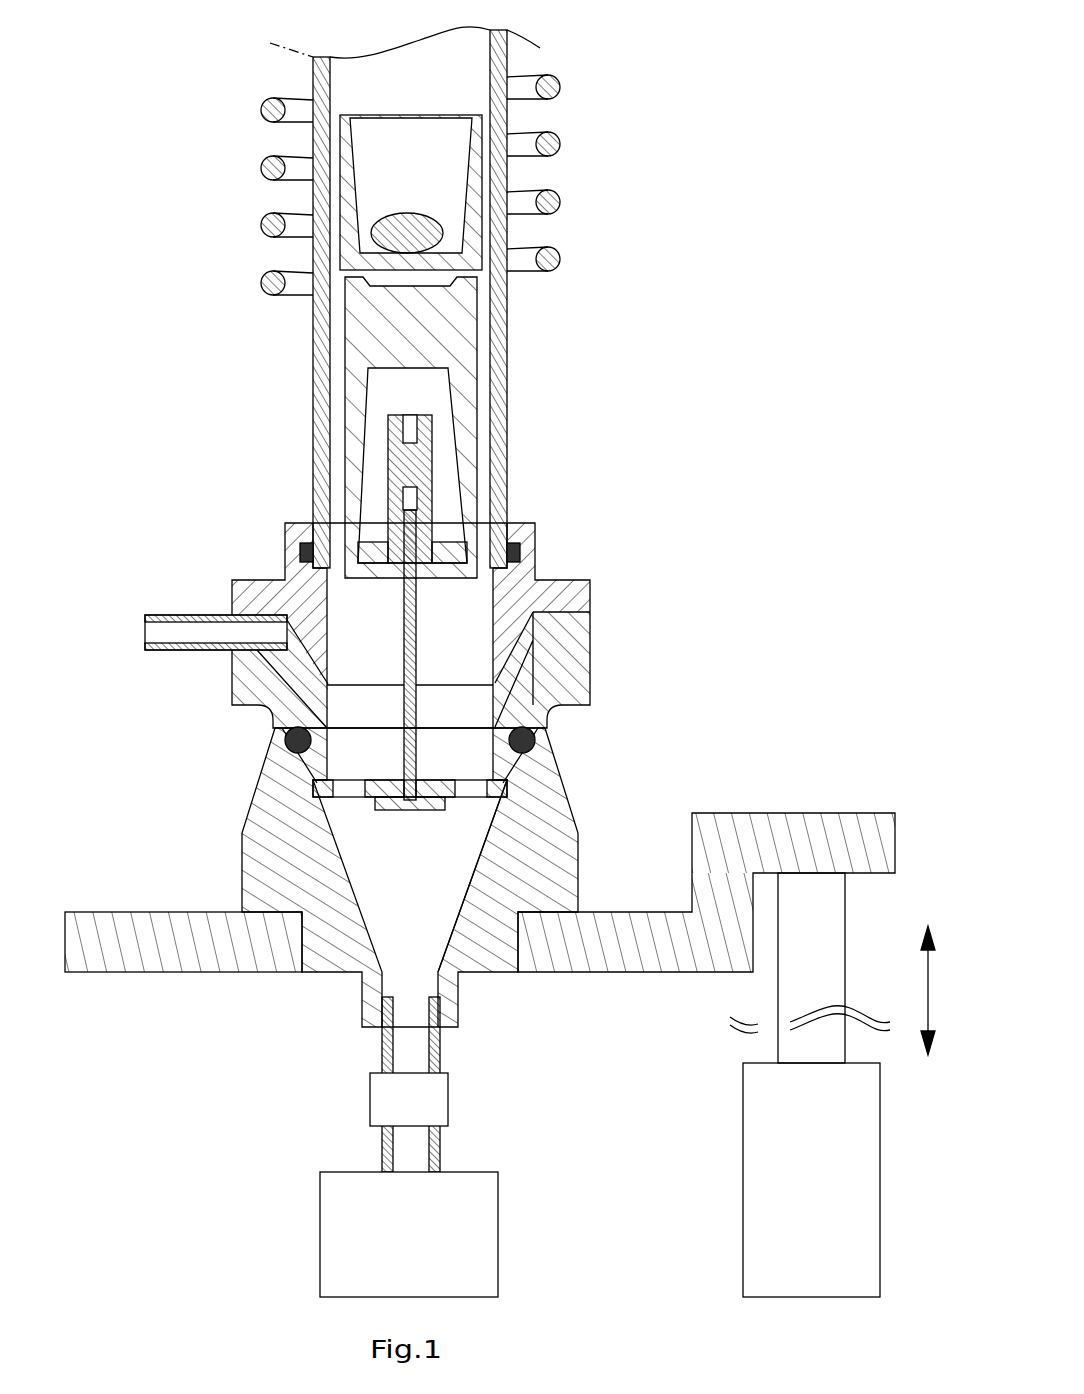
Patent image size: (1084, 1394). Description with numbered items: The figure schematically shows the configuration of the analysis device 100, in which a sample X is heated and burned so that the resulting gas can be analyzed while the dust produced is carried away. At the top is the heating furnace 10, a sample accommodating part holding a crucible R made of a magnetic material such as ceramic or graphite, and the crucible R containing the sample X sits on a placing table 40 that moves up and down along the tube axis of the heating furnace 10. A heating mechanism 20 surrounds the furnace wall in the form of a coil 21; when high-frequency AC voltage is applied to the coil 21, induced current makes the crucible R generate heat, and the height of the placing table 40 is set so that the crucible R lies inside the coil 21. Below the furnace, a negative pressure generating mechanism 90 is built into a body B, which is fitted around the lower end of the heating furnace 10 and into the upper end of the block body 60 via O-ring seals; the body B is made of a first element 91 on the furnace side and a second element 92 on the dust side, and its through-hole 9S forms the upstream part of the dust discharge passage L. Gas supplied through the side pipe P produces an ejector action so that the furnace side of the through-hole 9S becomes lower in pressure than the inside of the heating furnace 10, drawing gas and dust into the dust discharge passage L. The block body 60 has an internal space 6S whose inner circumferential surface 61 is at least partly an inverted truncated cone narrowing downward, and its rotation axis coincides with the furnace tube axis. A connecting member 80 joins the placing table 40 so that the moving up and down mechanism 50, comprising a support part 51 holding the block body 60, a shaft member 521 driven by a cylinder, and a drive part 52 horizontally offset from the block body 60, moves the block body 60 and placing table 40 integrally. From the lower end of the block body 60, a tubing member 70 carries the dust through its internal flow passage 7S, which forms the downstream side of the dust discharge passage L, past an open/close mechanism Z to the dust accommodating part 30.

The analysis device 100 is at (708, 90).
The heating furnace 10 is at (507, 342).
The heating mechanism 20 is at (327, 180).
The coil 21 is at (261, 228).
The crucible R is at (480, 192).
The sample X is at (407, 213).
The placing table 40 is at (477, 445).
The negative pressure generating mechanism 90 is at (475, 604).
The first element 91 is at (590, 598).
The second element 92 is at (590, 642).
The body B is at (697, 607).
The through-hole 9S is at (377, 672).
The pipe P is at (170, 614).
The connecting member 80 is at (431, 771).
The block body 60 is at (398, 877).
The inner circumferential surface 61 is at (474, 841).
The dust discharge passage L is at (377, 878).
The internal space 6S is at (395, 939).
The support part 51 is at (715, 812).
The moving up and down mechanism 50 is at (777, 1085).
The shaft member 521 is at (776, 995).
The drive part 52 is at (743, 1196).
The tubing member 70 is at (380, 1052).
The internal flow passage 7S is at (395, 1061).
The open/close mechanism Z is at (448, 1098).
The dust accommodating part 30 is at (320, 1233).